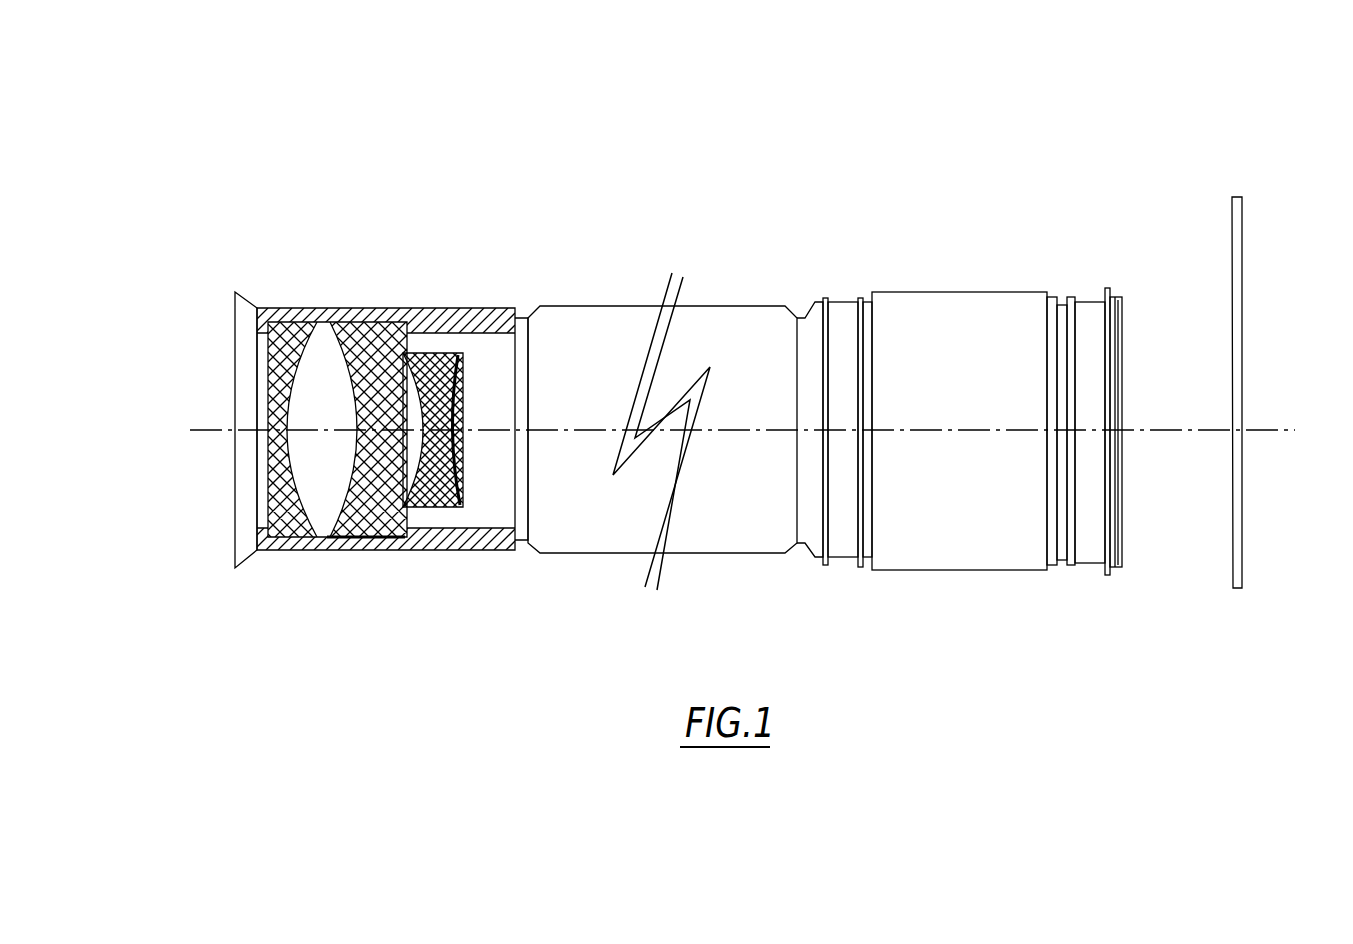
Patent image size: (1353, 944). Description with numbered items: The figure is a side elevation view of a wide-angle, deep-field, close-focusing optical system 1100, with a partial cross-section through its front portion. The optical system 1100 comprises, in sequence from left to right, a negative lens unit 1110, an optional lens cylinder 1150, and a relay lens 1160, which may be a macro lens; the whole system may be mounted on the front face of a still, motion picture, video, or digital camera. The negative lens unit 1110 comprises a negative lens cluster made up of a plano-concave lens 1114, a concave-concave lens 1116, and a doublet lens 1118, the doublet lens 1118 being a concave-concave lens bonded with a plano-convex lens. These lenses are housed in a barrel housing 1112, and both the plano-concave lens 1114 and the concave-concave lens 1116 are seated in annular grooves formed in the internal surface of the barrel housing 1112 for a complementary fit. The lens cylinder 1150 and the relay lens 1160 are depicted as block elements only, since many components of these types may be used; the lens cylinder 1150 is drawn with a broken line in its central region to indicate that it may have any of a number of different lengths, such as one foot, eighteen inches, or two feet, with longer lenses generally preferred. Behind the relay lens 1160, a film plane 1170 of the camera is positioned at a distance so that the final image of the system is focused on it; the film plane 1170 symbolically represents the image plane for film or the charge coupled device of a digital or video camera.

The optical system 1100 is at (870, 125).
The negative lens unit 1110 is at (327, 302).
The barrel housing 1112 is at (447, 310).
The plano-concave lens 1114 is at (293, 523).
The concave-concave lens 1116 is at (367, 518).
The doublet lens 1118 is at (435, 505).
The lens cylinder 1150 is at (715, 306).
The relay lens 1160 is at (943, 292).
The film plane 1170 is at (1238, 228).